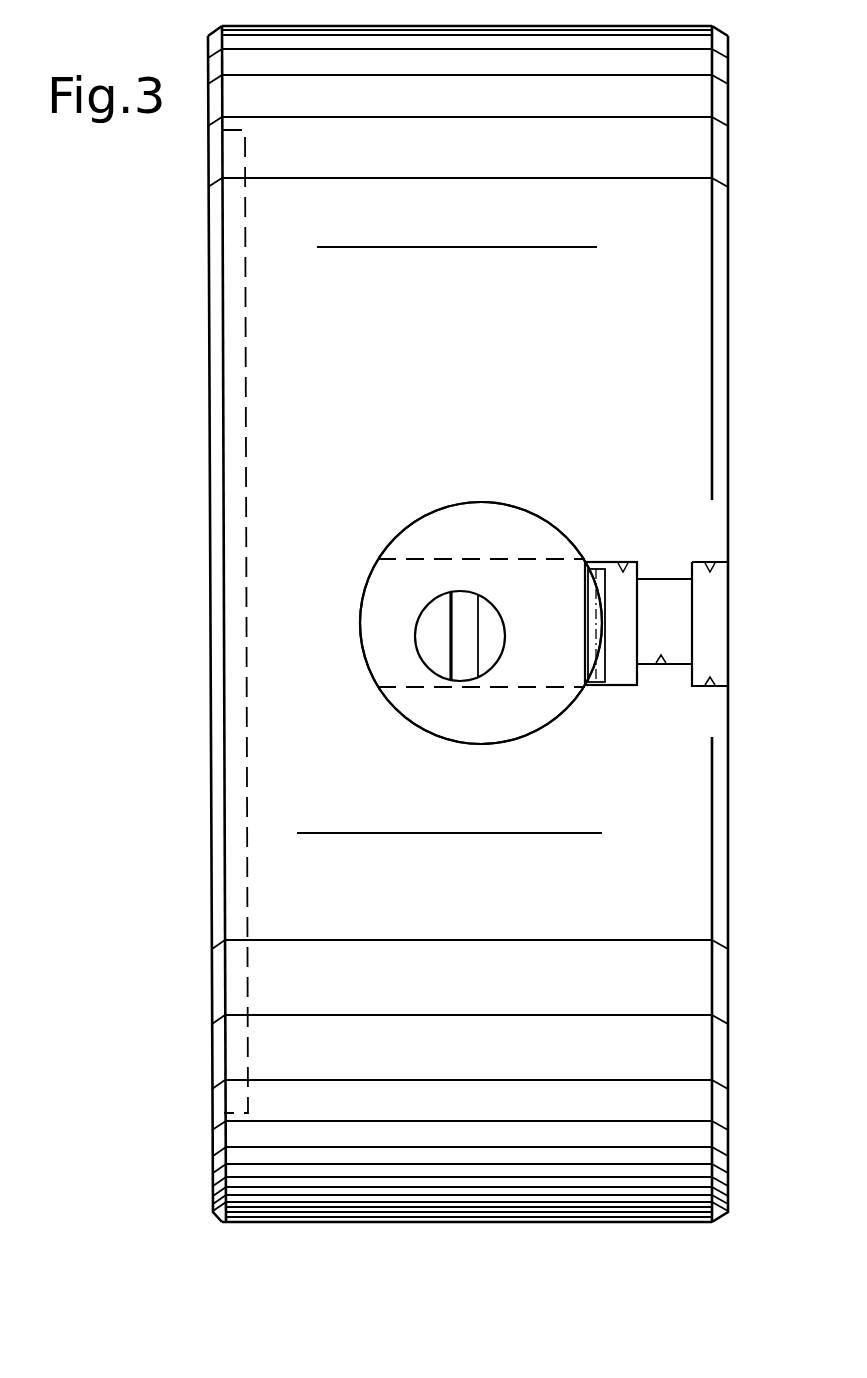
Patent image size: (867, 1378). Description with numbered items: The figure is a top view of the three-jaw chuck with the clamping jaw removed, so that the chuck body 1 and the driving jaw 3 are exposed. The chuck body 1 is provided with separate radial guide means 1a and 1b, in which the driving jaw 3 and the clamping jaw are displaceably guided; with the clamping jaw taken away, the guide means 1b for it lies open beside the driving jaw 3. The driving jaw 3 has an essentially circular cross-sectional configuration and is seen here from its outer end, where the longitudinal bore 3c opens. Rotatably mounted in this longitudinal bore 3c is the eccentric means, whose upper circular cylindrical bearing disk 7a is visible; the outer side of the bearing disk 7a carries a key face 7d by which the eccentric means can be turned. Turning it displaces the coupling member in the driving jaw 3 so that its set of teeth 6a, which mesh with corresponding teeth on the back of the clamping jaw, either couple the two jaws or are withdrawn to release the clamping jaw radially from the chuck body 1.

The chuck body 1 is at (268, 1045).
The radial guide means 1a is at (436, 736).
The radial guide means 1b is at (623, 568).
The driving jaw 3 is at (523, 717).
The longitudinal bore 3c is at (432, 598).
The set of teeth 6a is at (602, 685).
The bearing disk 7a is at (427, 630).
The key face 7d is at (470, 640).